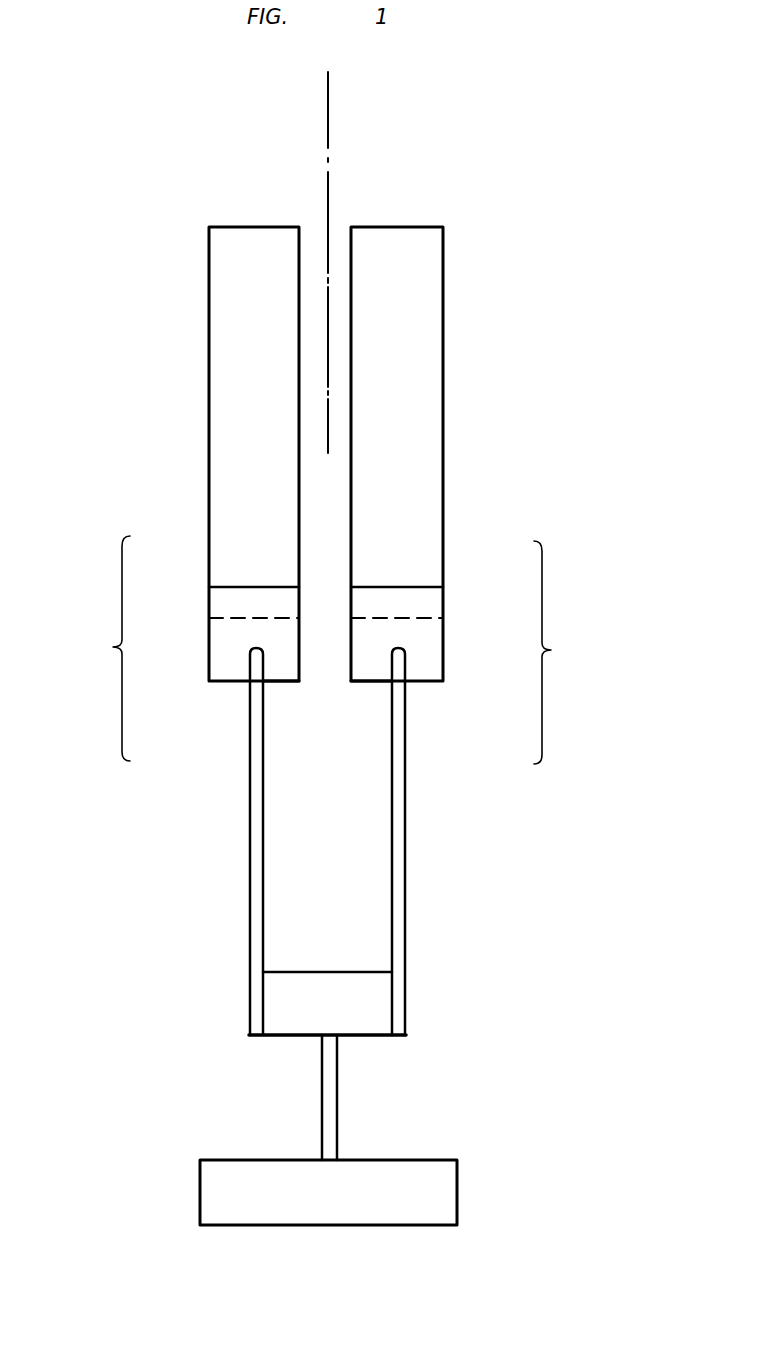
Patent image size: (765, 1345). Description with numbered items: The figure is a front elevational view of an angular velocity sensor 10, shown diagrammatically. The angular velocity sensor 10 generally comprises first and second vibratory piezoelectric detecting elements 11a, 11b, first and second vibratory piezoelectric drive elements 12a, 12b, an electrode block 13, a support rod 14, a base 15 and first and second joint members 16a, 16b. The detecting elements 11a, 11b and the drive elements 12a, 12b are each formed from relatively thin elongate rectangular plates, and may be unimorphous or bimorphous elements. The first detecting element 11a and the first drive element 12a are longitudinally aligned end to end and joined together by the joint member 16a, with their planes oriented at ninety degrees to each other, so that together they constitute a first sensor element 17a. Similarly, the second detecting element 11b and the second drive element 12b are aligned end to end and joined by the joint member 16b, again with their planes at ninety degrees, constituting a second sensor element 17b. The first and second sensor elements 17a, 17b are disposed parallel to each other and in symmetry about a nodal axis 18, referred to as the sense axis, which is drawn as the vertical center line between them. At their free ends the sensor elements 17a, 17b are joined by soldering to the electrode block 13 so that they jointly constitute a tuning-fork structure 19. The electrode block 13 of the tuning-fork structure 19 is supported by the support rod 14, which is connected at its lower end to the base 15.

The angular velocity sensor 10 is at (487, 234).
The first vibratory piezoelectric detecting element 11a is at (433, 562).
The second vibratory piezoelectric detecting element 11b is at (222, 557).
The first vibratory piezoelectric drive element 12a is at (405, 745).
The second vibratory piezoelectric drive element 12b is at (252, 755).
The electrode block 13 is at (370, 1023).
The support rod 14 is at (327, 1098).
The base 15 is at (252, 1210).
The first joint member 16a is at (363, 665).
The second joint member 16b is at (282, 672).
The first sensor element 17a is at (566, 652).
The second sensor element 17b is at (100, 648).
The nodal axis 18 is at (328, 120).
The tuning-fork structure 19 is at (326, 877).